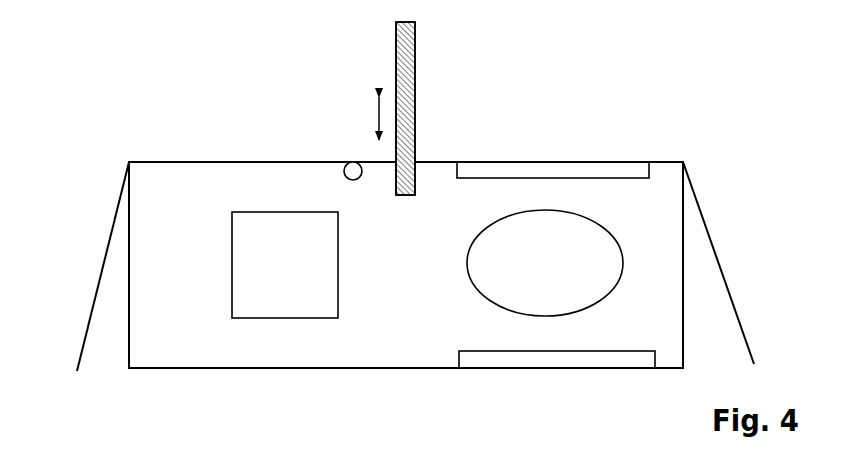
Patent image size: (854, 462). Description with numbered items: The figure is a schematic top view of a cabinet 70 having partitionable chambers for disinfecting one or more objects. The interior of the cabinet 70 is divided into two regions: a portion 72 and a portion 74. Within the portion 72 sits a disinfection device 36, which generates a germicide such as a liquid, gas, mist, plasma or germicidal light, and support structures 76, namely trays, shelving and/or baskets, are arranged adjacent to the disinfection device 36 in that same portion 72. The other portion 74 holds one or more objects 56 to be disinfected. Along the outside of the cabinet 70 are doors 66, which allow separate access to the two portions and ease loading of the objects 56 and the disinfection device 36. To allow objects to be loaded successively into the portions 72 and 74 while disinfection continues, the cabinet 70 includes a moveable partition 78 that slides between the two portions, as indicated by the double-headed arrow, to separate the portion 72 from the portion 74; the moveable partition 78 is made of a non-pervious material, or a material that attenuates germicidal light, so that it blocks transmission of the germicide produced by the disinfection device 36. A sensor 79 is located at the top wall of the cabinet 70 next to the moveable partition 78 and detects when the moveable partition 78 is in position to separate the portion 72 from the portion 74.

The cabinet 70 is at (737, 158).
The portion 72 is at (649, 314).
The portion 74 is at (253, 344).
The doors 66 is at (97, 284).
The support structures 76 is at (555, 162).
The objects 56 is at (285, 265).
The disinfection device 36 is at (545, 263).
The moveable partition 78 is at (405, 108).
The sensor 79 is at (345, 163).